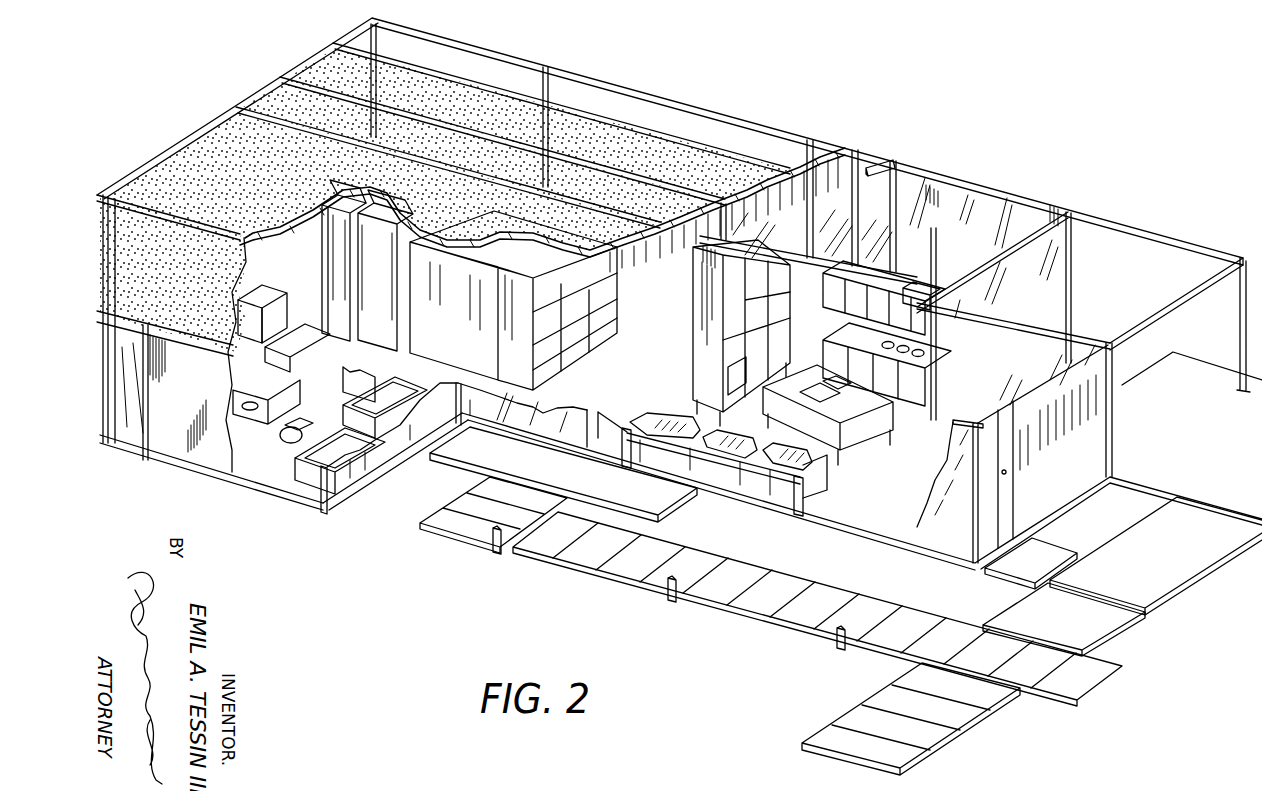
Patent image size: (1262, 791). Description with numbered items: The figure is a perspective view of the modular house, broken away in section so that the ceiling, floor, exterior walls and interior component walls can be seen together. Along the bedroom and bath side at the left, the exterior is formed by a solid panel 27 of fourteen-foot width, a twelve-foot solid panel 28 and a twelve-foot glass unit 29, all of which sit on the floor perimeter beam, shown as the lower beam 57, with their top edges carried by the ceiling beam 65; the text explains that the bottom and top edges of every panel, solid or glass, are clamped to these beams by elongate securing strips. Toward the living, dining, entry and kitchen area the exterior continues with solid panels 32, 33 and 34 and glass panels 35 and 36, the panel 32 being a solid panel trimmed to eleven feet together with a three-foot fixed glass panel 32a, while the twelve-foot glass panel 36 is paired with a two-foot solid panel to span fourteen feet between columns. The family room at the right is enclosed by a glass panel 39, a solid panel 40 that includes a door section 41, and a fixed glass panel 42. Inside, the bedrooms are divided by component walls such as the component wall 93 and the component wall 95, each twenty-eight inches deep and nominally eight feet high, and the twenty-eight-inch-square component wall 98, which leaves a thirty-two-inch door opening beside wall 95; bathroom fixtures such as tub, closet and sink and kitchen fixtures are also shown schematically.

The solid panel 27 is at (378, 452).
The solid panel 28 is at (205, 450).
The glass unit 29 is at (136, 437).
The solid panel 32 is at (687, 257).
The fixed glass panel 32a is at (622, 282).
The solid panel 33 is at (987, 212).
The solid panel 34 is at (782, 488).
The glass panel 35 is at (790, 187).
The glass panel 36 is at (1068, 246).
The glass panel 39 is at (1068, 353).
The solid panel 40 is at (1093, 431).
The door section 41 is at (998, 508).
The fixed glass panel 42 is at (940, 485).
The lower beam 57 is at (883, 530).
The ceiling beam 65 is at (1178, 304).
The component wall 93 is at (253, 317).
The component wall 95 is at (280, 308).
The component wall 98 is at (320, 264).